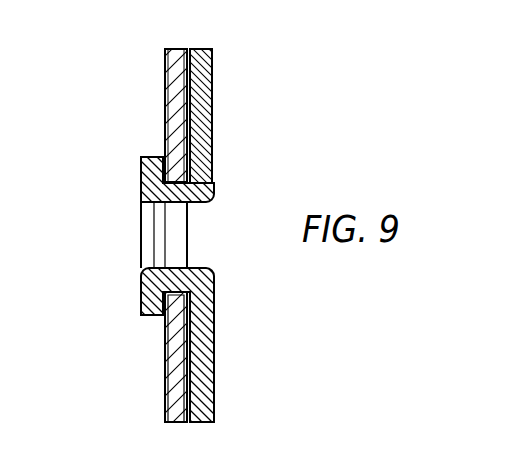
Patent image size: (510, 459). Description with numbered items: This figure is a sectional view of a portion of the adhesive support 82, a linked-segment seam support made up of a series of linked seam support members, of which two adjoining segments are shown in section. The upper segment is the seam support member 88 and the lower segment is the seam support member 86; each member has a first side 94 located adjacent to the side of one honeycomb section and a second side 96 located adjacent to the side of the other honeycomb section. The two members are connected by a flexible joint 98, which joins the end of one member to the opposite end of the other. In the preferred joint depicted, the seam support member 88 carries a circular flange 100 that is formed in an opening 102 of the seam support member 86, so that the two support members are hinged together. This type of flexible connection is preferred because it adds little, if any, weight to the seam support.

The adhesive support 82 is at (236, 112).
The seam support member 88 is at (197, 50).
The circular flange 100 is at (141, 172).
The opening 102 is at (198, 184).
The flexible joint 98 is at (120, 255).
The second side 96 is at (214, 285).
The seam support member 86 is at (172, 422).
The first side 94 is at (167, 382).